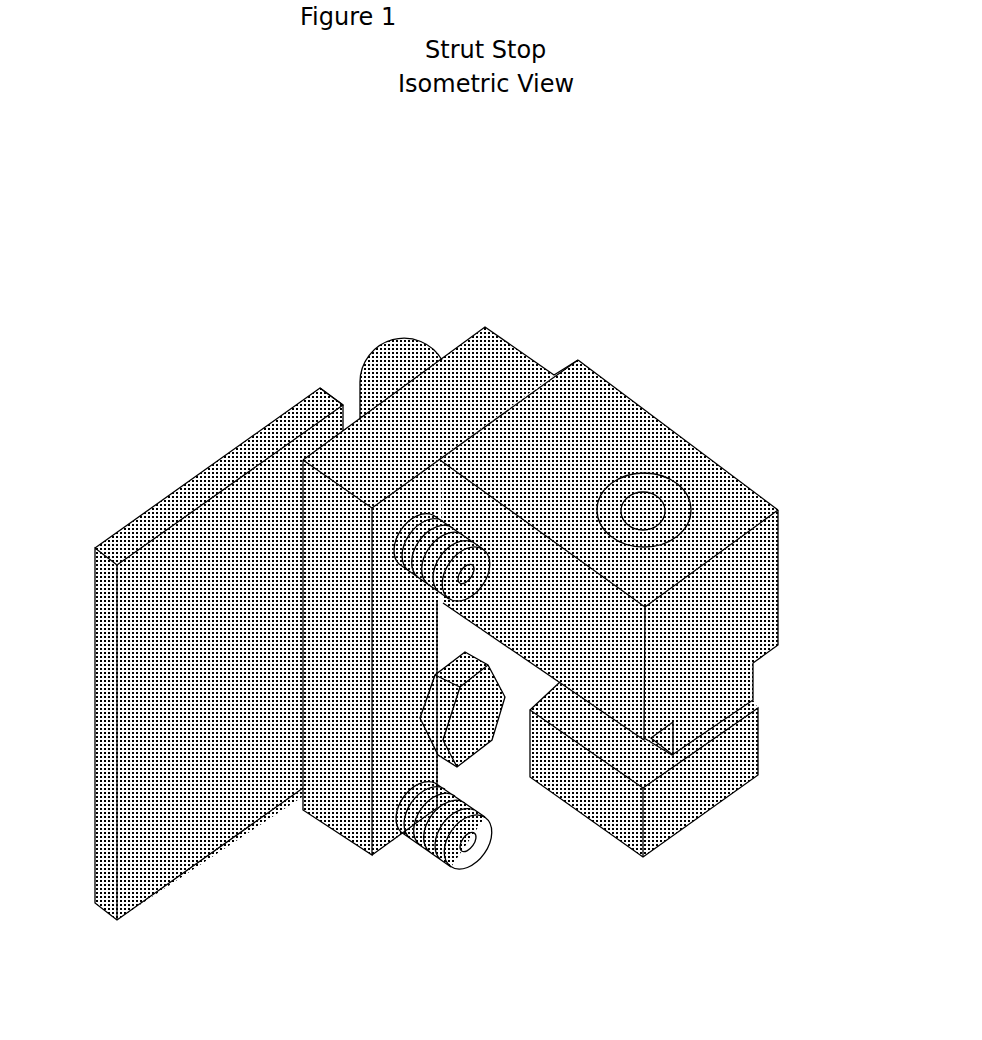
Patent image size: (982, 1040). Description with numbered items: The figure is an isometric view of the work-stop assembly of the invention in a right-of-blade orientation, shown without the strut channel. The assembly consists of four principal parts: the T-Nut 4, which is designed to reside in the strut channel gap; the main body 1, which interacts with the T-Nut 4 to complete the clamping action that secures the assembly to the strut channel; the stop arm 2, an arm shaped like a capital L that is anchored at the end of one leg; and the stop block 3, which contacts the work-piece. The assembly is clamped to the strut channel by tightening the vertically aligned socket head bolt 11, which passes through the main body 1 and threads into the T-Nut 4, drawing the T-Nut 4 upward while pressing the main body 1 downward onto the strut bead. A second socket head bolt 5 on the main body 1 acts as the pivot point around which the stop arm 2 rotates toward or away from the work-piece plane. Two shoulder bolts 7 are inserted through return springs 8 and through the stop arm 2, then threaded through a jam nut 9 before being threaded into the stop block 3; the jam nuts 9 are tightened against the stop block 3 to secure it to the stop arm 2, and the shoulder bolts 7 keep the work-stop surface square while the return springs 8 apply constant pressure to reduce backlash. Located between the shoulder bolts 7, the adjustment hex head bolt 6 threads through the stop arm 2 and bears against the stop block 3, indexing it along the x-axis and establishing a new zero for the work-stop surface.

The main body 1 is at (609, 484).
The stop arm 2 is at (405, 639).
The stop block 3 is at (191, 629).
The T-Nut 4 is at (660, 820).
The ½-13 × 1½" socket head bolt 5 is at (370, 312).
The ⅜-16 × 1½" adjustment hex head bolt 6 is at (527, 815).
The 5/16 × 1½" shoulder bolt 7 is at (438, 903).
The return springs 8 is at (407, 855).
The jam nut 9 is at (289, 356).
The ½-13 × 1½" socket head bolt 11 is at (737, 485).